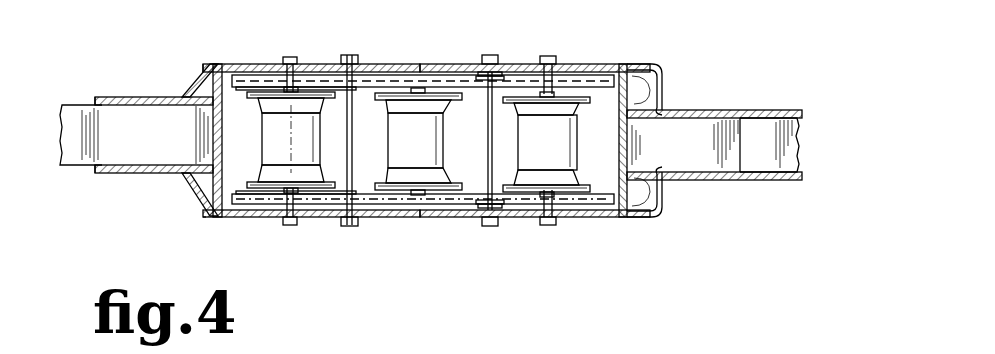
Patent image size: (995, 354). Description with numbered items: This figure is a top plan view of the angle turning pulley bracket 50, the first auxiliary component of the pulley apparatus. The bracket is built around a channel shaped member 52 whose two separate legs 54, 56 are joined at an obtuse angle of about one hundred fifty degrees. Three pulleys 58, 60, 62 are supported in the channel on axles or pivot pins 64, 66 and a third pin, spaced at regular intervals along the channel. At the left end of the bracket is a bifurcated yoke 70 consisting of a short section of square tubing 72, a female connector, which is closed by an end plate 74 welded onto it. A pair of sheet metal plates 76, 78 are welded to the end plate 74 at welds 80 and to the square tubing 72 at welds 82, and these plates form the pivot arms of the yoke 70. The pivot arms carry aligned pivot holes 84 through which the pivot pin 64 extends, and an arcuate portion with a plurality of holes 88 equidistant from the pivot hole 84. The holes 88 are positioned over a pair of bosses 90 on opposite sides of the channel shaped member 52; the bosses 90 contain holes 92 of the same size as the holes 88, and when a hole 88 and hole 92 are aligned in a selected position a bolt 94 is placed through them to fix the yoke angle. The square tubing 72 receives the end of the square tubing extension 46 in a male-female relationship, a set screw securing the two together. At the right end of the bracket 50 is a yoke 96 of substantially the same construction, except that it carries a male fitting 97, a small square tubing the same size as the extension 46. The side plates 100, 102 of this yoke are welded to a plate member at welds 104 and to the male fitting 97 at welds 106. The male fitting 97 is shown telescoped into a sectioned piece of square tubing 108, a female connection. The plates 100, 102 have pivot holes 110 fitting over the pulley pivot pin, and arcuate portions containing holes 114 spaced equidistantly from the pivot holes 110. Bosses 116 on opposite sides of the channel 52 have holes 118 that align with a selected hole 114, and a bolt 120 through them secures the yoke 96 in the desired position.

The square tubing extension 46 is at (72, 158).
The angle turning pulley bracket 50 is at (511, 254).
The channel shaped member 52 is at (384, 205).
The leg 54 is at (276, 76).
The leg 56 is at (513, 183).
The pulley 58 is at (305, 160).
The pulley 60 is at (427, 150).
The pulley 62 is at (552, 150).
The pivot pin 64 is at (288, 227).
The pivot pin 66 is at (414, 205).
The bifurcated yoke 70 is at (190, 63).
The square tubing 72 is at (137, 173).
The end plate 74 is at (222, 133).
The sheet metal plate 76 is at (246, 218).
The sheet metal plate 78 is at (236, 63).
The weld 80 is at (229, 209).
The weld 82 is at (197, 94).
The pivot hole 84 is at (296, 65).
The hole 88 is at (366, 73).
The boss 90 is at (357, 88).
The hole 92 is at (348, 55).
The bolt 94 is at (356, 59).
The yoke 96 is at (738, 234).
The male fitting 97 is at (708, 135).
The side plate 100 is at (606, 218).
The side plate 102 is at (606, 65).
The weld 104 is at (642, 70).
The weld 106 is at (664, 106).
The square tubing 108 is at (775, 184).
The pivot hole 110 is at (550, 62).
The hole 114 is at (485, 197).
The boss 116 is at (480, 73).
The hole 118 is at (493, 76).
The bolt 120 is at (488, 55).